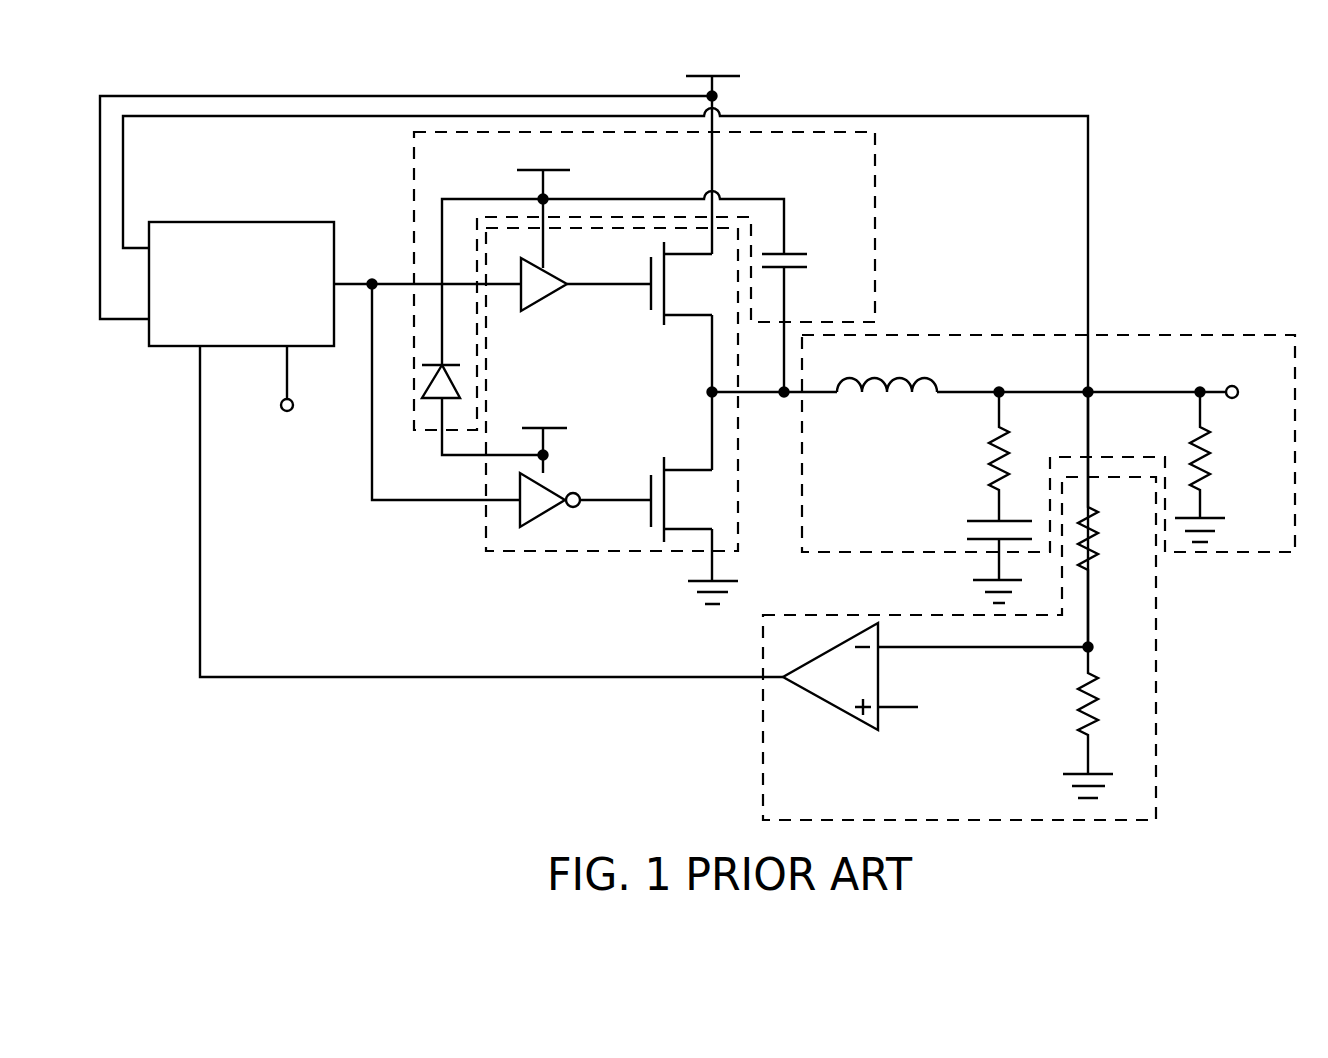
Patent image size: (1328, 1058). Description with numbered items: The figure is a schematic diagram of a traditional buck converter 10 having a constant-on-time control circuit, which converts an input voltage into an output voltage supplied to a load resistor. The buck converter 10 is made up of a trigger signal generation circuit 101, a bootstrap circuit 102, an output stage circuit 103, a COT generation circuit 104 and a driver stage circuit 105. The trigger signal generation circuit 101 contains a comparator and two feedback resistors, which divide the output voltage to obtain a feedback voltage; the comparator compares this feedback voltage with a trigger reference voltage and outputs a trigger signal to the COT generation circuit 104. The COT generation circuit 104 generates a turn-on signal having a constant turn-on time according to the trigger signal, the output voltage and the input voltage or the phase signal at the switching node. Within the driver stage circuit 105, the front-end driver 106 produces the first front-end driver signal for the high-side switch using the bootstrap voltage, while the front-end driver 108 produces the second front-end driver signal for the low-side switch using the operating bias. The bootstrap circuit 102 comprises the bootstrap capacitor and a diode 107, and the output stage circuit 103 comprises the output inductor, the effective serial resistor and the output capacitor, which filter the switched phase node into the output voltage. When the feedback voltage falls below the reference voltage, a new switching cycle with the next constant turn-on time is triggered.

The buck converter 10 is at (1140, 123).
The trigger signal generation circuit 101 is at (1157, 650).
The bootstrap circuit 102 is at (876, 207).
The output stage circuit 103 is at (1222, 335).
The COT generation circuit 104 is at (236, 222).
The driver stage circuit 105 is at (540, 551).
The front-end driver 106 is at (545, 298).
The diode 107 is at (432, 400).
The front-end driver 108 is at (557, 489).